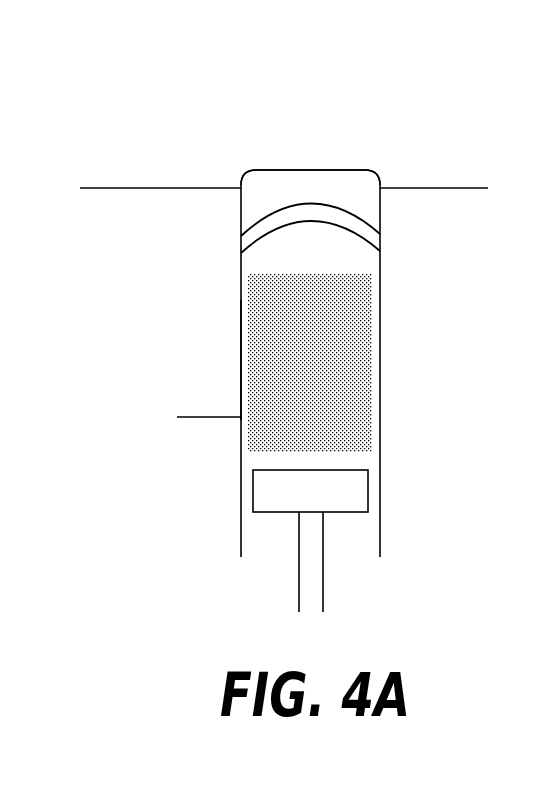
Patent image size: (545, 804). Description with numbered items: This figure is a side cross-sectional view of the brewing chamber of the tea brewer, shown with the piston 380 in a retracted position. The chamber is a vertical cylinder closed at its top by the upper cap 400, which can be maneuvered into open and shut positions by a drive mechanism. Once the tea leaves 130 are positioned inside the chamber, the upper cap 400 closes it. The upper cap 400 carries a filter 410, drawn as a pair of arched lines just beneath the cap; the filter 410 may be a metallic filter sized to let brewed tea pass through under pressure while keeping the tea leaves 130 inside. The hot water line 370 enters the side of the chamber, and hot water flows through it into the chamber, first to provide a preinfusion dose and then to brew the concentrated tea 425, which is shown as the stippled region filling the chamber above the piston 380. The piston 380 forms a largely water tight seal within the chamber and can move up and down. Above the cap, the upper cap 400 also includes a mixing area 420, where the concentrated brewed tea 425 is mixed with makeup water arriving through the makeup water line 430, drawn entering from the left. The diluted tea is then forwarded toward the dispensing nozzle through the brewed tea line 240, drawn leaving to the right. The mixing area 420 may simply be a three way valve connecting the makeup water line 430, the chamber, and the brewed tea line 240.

The upper cap 400 is at (232, 164).
The mixing area 420 is at (305, 168).
The makeup water line 430 is at (143, 187).
The brewed tea line 240 is at (460, 187).
The filter 410 is at (250, 238).
The concentrated brewed tea 425 is at (345, 311).
The tea leaves 130 is at (248, 355).
The hot water line 370 is at (205, 419).
The piston 380 is at (343, 487).